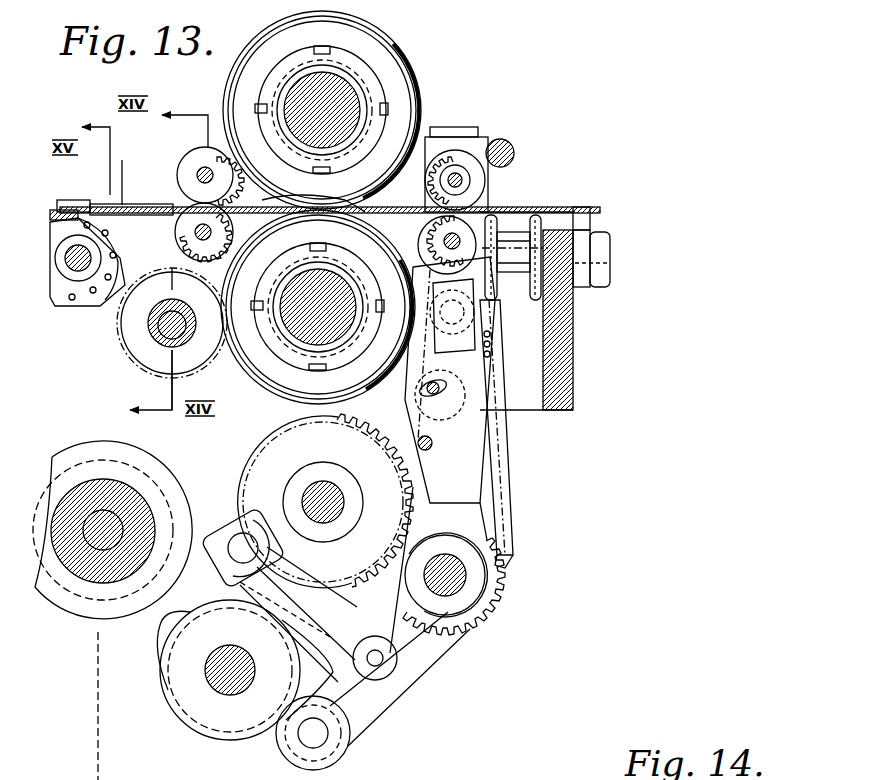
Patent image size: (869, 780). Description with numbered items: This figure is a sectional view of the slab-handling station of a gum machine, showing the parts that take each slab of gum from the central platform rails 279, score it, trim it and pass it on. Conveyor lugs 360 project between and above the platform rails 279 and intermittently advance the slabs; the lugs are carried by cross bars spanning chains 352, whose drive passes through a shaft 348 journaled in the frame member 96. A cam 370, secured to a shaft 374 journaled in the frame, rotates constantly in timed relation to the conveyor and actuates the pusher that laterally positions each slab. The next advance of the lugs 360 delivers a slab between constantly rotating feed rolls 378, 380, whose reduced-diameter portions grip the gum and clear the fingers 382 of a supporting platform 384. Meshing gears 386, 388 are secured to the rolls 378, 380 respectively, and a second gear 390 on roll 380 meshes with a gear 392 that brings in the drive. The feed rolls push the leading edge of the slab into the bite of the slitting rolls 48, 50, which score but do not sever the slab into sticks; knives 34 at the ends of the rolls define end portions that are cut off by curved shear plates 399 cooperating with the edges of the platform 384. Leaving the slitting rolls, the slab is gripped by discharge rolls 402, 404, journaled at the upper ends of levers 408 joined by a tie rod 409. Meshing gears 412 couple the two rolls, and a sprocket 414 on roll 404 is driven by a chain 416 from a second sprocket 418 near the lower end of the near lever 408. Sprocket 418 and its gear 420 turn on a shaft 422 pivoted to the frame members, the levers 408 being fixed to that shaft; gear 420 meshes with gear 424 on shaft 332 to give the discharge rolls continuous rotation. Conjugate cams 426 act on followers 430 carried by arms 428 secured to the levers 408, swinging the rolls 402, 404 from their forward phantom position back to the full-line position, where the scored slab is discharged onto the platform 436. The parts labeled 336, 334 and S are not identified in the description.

The slitting roll 48 is at (434, 63).
The upper drum shaft 336 is at (300, 72).
The slitting roll 50 is at (271, 406).
The knife 34 is at (358, 396).
The lower drum shaft 334 is at (302, 340).
The shaft S is at (103, 205).
The platform rail 279 is at (122, 204).
The platform 436 is at (550, 211).
The conveyor lug 360 is at (82, 200).
The shaft 348 is at (94, 256).
The chain 352 is at (95, 306).
The feed roll 378 is at (205, 150).
The finger 382 is at (196, 176).
The gear 386 is at (240, 182).
The gear 388 is at (200, 215).
The second gear 390 is at (230, 247).
The feed roll 380 is at (172, 224).
The supporting platform 384 is at (268, 194).
The shear plate 399 is at (340, 208).
The gear 392 is at (128, 375).
The discharge roll 402 is at (462, 153).
The tie rod 409 is at (514, 150).
The meshing gear 412 is at (428, 186).
The discharge roll 404 is at (493, 214).
The frame member 96 is at (533, 410).
The lever 408 is at (473, 502).
The chain 416 is at (493, 345).
The sprocket 414 is at (445, 354).
The second sprocket 418 is at (505, 540).
The shaft 332 is at (333, 483).
The cam 370 is at (183, 491).
The shaft 374 is at (100, 552).
The follower 430 is at (228, 583).
The gear 424 is at (357, 604).
The conjugate cam 426 is at (220, 756).
The gear 420 is at (503, 601).
The shaft 422 is at (460, 598).
The arm 428 is at (382, 705).